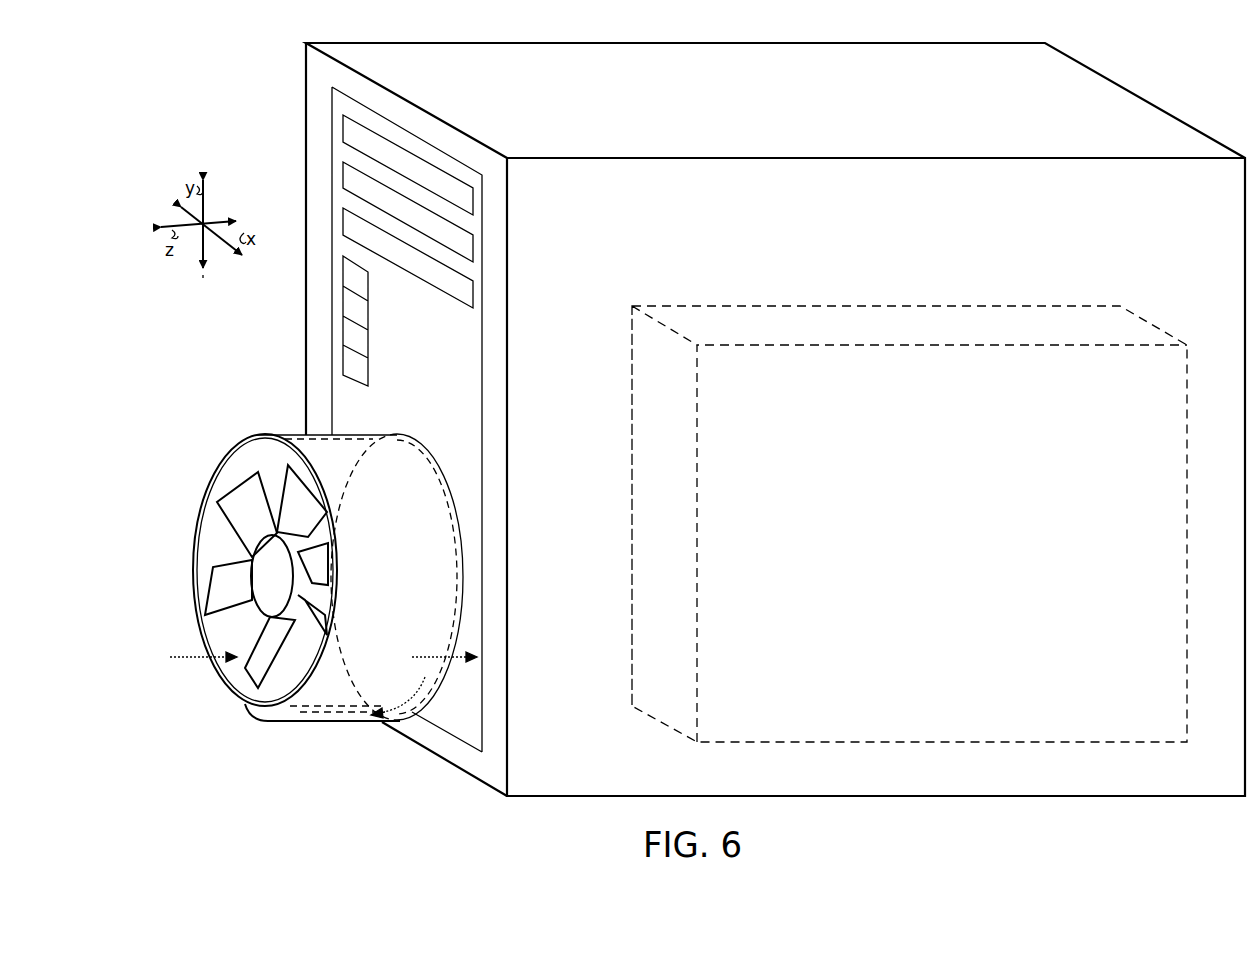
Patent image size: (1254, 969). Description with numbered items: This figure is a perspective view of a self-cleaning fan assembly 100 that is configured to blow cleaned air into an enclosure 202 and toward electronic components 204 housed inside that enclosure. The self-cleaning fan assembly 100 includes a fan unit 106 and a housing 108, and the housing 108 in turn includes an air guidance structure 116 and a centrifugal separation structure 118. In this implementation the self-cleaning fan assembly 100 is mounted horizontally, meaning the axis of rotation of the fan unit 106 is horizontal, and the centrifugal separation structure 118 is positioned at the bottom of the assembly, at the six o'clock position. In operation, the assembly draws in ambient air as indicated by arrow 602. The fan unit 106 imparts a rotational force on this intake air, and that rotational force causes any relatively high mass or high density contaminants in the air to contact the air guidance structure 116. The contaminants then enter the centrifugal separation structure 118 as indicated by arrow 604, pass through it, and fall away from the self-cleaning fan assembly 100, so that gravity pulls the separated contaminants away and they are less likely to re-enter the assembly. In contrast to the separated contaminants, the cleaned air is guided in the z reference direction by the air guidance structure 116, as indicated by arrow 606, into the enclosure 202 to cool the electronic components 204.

The enclosure 202 is at (306, 108).
The electronic components 204 is at (1090, 526).
The self-cleaning fan assembly 100 is at (270, 408).
The housing 108 is at (365, 433).
The air guidance structure 116 is at (207, 497).
The fan unit 106 is at (210, 565).
The centrifugal separation structure 118 is at (237, 722).
The arrow 602 is at (197, 659).
The arrow 604 is at (410, 690).
The arrow 606 is at (427, 655).